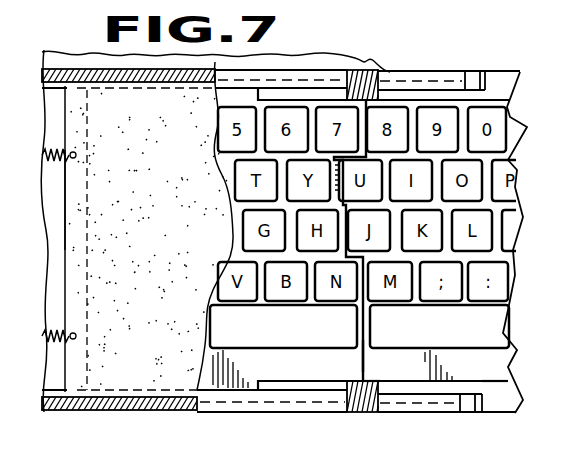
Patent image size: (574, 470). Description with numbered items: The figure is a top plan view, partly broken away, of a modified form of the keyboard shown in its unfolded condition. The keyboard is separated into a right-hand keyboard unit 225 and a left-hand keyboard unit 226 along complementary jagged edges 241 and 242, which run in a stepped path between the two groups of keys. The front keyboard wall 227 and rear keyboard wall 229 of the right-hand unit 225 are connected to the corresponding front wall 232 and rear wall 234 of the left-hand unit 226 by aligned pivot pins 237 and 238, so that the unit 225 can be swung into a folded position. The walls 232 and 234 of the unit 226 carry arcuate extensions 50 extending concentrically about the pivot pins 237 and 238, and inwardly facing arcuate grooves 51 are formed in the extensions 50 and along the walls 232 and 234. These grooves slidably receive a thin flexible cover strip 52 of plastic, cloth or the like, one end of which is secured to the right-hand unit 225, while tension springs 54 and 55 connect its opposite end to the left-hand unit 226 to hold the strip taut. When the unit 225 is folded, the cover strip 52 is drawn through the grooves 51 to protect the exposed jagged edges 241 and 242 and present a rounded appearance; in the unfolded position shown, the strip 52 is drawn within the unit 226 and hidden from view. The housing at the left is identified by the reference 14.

The keyboard housing 14 is at (72, 57).
The rear keyboard wall 234 is at (319, 80).
The pivot pin 238 is at (387, 78).
The arcuate grooves 51 is at (465, 88).
The rear keyboard wall 229 is at (503, 82).
The tension spring 55 is at (44, 157).
The cover strip 52 is at (77, 205).
The tension spring 54 is at (44, 335).
The front keyboard wall 232 is at (170, 411).
The left-hand keyboard unit 226 is at (275, 414).
The jagged edge 241 is at (363, 382).
The jagged edge 242 is at (366, 370).
The front keyboard wall 227 is at (502, 390).
The pivot pin 237 is at (341, 411).
The arcuate extensions 50 is at (432, 413).
The right-hand keyboard unit 225 is at (481, 415).